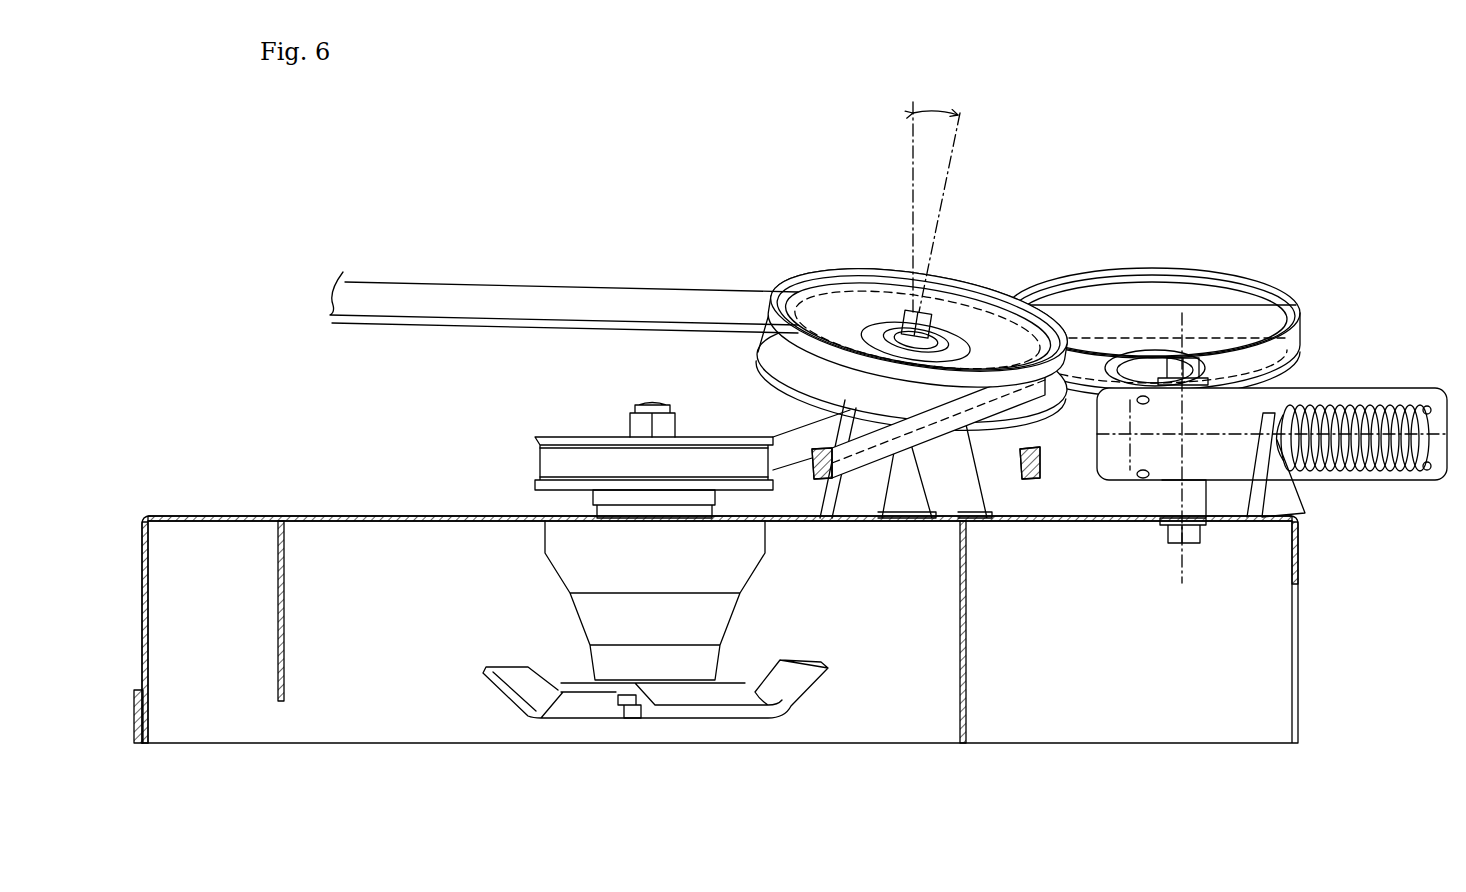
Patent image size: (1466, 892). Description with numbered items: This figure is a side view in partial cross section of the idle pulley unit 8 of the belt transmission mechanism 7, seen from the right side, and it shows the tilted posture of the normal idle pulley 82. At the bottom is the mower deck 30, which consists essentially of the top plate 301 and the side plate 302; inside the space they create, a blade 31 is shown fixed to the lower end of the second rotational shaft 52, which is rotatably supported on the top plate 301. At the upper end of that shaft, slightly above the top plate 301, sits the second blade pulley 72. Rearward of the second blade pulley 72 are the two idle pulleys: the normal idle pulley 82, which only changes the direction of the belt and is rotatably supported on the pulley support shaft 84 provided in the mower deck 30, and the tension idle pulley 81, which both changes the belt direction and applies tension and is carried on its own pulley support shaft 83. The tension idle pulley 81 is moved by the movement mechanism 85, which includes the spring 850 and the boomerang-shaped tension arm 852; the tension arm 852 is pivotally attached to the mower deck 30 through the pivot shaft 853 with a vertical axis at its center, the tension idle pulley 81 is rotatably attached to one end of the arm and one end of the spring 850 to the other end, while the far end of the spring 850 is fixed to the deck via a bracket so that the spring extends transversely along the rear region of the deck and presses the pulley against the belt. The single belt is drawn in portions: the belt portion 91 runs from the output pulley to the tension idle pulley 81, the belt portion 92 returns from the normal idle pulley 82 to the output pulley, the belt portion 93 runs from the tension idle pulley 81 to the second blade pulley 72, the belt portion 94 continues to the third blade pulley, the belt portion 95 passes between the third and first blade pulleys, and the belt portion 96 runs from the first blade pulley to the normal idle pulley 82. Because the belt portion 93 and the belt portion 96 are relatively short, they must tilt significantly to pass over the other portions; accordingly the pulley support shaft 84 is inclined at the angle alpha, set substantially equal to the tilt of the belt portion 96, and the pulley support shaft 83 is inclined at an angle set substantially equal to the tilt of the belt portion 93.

The belt transmission mechanism 7 is at (545, 282).
The idle pulley unit 8 is at (1283, 255).
The mower deck 30 is at (716, 581).
The top plate 301 is at (386, 515).
The side plate 302 is at (150, 617).
The blade 31 is at (703, 698).
The second rotational shaft 52 is at (648, 405).
The second blade pulley 72 is at (540, 437).
The tension idle pulley 81 is at (1147, 283).
The normal idle pulley 82 is at (911, 373).
The pulley support shaft 83 is at (1150, 383).
The pulley support shaft 84 is at (920, 318).
The movement mechanism 85 is at (1272, 459).
The spring 850 is at (1350, 400).
The tension arm 852 is at (1366, 478).
The pivot shaft 853 is at (1170, 505).
The belt portion 91 is at (620, 330).
The belt portion 92 is at (660, 300).
The belt portion 93 is at (812, 432).
The belt portion 94 is at (538, 468).
The belt portion 95 is at (1028, 480).
The belt portion 96 is at (864, 462).